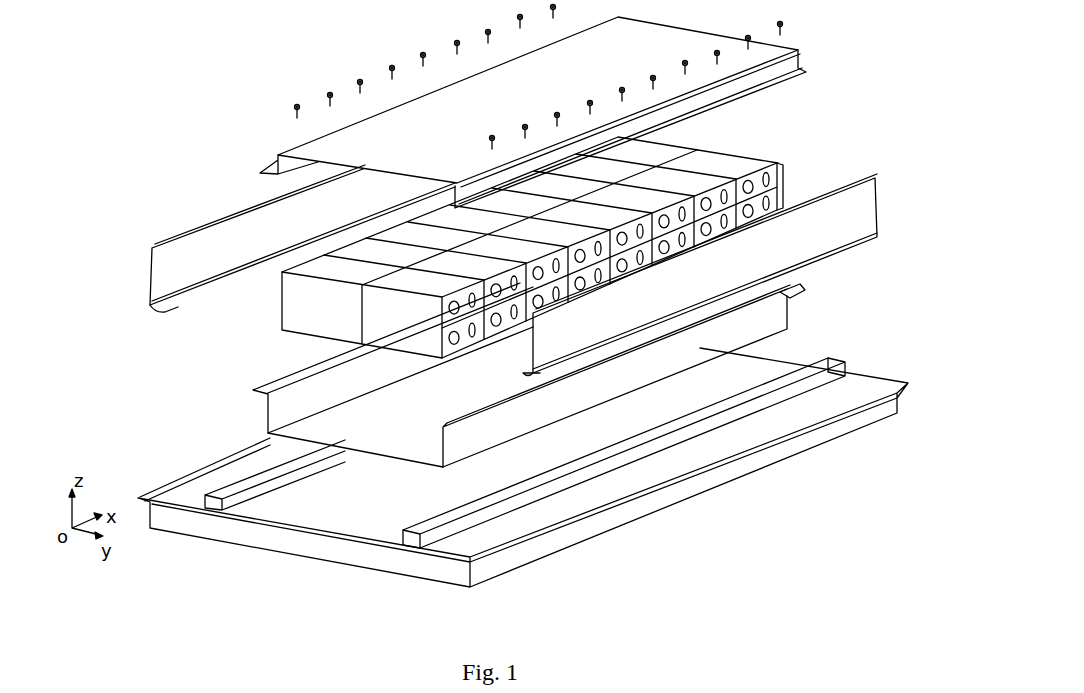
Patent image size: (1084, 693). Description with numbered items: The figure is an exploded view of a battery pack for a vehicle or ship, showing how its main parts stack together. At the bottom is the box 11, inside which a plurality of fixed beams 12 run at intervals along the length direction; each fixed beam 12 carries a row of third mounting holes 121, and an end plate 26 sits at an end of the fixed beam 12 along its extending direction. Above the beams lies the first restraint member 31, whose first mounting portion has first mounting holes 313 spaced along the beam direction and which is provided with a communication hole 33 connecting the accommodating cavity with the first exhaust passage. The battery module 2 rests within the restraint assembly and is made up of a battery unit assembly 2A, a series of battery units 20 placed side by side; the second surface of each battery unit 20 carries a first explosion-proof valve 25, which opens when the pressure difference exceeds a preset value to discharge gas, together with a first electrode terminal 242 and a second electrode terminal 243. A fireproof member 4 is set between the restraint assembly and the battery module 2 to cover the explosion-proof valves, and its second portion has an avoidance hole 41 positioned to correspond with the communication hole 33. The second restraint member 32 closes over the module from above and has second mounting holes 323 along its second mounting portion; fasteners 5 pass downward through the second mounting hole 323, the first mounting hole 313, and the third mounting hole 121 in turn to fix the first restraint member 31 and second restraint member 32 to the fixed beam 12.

The battery module 2 is at (217, 332).
The battery unit assembly 2A is at (433, 283).
The fireproof member 4 is at (172, 272).
The fasteners 5 is at (358, 76).
The box 11 is at (563, 532).
The fixed beam 12 is at (257, 490).
The battery unit 20 is at (688, 156).
The first explosion-proof valve 25 is at (765, 187).
The end plate 26 is at (305, 298).
The first restraint member 31 is at (288, 408).
The second restraint member 32 is at (322, 146).
The communication hole 33 is at (278, 435).
The avoidance hole 41 is at (167, 310).
The third mounting hole 121 is at (600, 447).
The first electrode terminal 242 is at (742, 193).
The second electrode terminal 243 is at (773, 173).
The first mounting hole 313 is at (793, 302).
The second mounting hole 323 is at (778, 82).